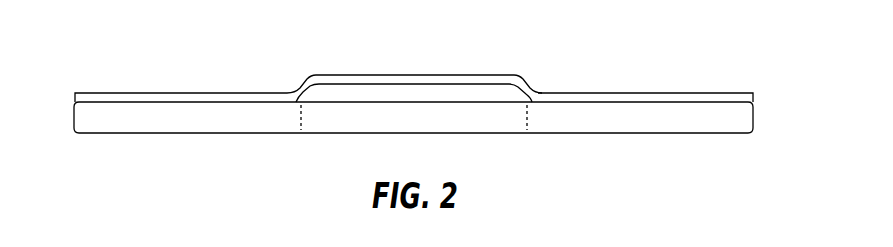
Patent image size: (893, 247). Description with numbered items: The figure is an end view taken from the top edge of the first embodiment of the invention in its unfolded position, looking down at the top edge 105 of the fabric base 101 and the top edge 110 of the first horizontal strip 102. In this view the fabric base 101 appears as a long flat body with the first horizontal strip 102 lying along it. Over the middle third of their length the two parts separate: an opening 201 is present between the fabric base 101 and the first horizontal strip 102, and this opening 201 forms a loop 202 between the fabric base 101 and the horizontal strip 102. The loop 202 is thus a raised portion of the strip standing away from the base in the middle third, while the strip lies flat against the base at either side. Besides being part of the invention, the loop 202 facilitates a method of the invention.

The fabric base 101 is at (648, 127).
The first horizontal strip 102 is at (693, 93).
The top edge of fabric base 105 is at (133, 115).
The top edge of first horizontal strip 110 is at (227, 98).
The opening 201 is at (407, 95).
The loop 202 is at (352, 82).